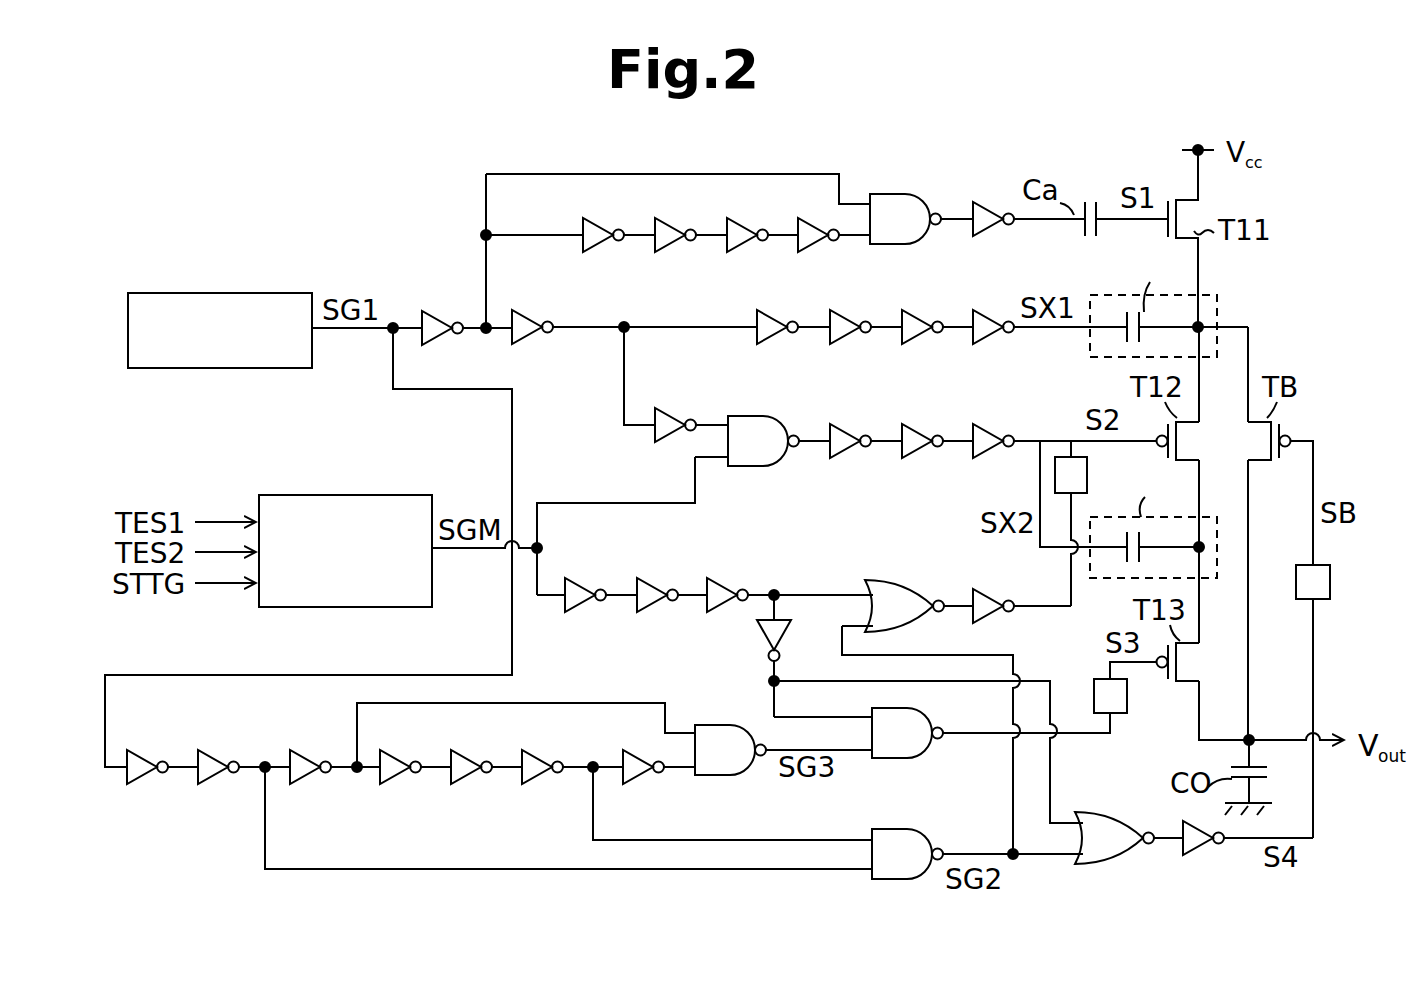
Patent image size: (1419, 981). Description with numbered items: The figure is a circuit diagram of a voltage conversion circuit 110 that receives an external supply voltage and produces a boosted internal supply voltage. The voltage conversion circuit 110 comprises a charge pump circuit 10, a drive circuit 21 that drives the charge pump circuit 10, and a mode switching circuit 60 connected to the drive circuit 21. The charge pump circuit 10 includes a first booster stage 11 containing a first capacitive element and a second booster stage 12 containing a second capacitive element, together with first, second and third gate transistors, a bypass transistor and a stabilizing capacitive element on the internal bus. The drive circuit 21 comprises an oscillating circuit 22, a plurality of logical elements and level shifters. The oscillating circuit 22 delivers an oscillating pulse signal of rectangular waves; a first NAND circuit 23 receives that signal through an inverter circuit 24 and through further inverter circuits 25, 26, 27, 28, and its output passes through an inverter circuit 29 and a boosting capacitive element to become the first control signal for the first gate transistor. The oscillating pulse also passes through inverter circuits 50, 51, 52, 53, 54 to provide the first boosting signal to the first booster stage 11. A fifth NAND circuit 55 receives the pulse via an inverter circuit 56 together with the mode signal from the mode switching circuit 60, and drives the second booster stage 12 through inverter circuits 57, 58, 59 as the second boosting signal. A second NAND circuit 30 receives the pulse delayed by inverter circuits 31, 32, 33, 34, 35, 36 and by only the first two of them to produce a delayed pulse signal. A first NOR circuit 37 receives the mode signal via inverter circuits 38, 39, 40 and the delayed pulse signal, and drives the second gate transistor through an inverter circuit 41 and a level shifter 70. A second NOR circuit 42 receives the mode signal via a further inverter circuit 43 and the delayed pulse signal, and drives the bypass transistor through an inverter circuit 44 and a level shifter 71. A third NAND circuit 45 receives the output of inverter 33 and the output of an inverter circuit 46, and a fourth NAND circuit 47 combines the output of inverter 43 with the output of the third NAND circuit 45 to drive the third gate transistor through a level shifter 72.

The voltage conversion circuit 110 is at (370, 162).
The charge pump circuit 10 is at (1140, 165).
The first booster stage 11 is at (1210, 290).
The second booster stage 12 is at (1215, 517).
The drive circuit 21 is at (947, 183).
The oscillating circuit 22 is at (276, 293).
The first NAND circuit 23 is at (892, 198).
The inverter circuit 24 is at (436, 308).
The inverter circuit 25 is at (597, 252).
The inverter circuit 26 is at (669, 252).
The inverter circuit 27 is at (741, 252).
The inverter circuit 28 is at (812, 252).
The inverter circuit 29 is at (989, 236).
The second NAND circuit 30 is at (895, 880).
The inverter circuit 31 is at (142, 784).
The inverter circuit 32 is at (213, 784).
The inverter circuit 33 is at (305, 784).
The inverter circuit 34 is at (395, 784).
The inverter circuit 35 is at (466, 784).
The inverter circuit 36 is at (537, 784).
The first NOR circuit 37 is at (908, 584).
The inverter circuit 38 is at (580, 612).
The inverter circuit 39 is at (652, 612).
The inverter circuit 40 is at (722, 612).
The inverter circuit 41 is at (986, 590).
The second NOR circuit 42 is at (1105, 864).
The inverter circuit 43 is at (782, 636).
The inverter circuit 44 is at (1203, 856).
The third NAND circuit 45 is at (722, 776).
The inverter circuit 46 is at (640, 784).
The fourth NAND circuit 47 is at (895, 759).
The inverter circuit 50 is at (530, 344).
The inverter circuit 51 is at (772, 344).
The inverter circuit 52 is at (845, 344).
The inverter circuit 53 is at (917, 344).
The inverter circuit 54 is at (988, 344).
The fifth NAND circuit 55 is at (750, 467).
The inverter circuit 56 is at (670, 411).
The inverter circuit 57 is at (845, 458).
The inverter circuit 58 is at (917, 458).
The inverter circuit 59 is at (988, 458).
The mode switching circuit 60 is at (400, 495).
The level shifter 70 is at (1064, 456).
The level shifter 71 is at (1292, 600).
The level shifter 72 is at (1128, 698).